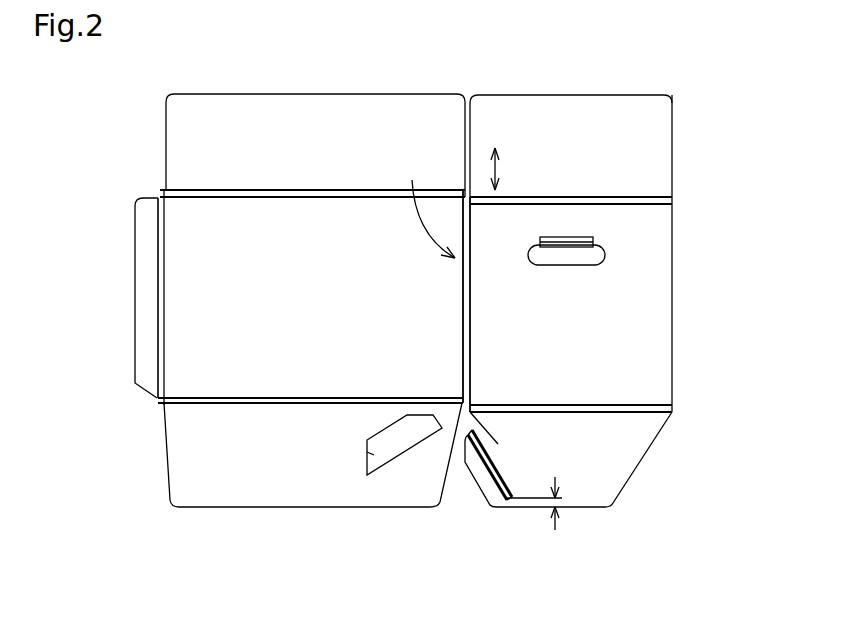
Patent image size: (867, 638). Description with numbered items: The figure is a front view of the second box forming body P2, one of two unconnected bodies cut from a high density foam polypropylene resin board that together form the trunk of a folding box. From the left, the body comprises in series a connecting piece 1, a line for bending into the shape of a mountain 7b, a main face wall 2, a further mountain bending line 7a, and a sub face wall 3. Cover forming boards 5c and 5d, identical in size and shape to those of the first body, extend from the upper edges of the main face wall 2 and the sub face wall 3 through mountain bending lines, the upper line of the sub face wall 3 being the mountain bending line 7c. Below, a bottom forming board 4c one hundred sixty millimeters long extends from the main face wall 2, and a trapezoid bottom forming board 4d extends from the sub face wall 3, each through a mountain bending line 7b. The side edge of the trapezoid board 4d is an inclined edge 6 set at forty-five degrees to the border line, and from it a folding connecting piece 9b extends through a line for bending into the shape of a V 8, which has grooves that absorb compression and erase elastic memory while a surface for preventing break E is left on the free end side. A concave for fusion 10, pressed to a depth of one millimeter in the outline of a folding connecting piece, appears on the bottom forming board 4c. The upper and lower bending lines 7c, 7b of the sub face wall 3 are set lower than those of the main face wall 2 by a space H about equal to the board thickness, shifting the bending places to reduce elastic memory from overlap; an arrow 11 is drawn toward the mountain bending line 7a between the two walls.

The connecting piece 1 is at (145, 307).
The main face wall 2 is at (317, 314).
The sub face wall 3 is at (609, 314).
The bottom forming board 4c is at (243, 465).
The trapezoid bottom forming board 4d is at (596, 465).
The cover forming board 5c is at (338, 155).
The cover forming board 5d is at (592, 155).
The inclined edge 6 is at (498, 444).
The line for bending into the shape of a mountain 7a is at (470, 290).
The line for bending into the shape of a mountain 7b is at (158, 260).
The line for bending into the shape of a mountain 7c is at (203, 190).
The line for bending into the shape of a V 8 is at (495, 500).
The folding connecting piece 9b is at (482, 478).
The concave for fusion 10 is at (370, 452).
The arrow indicating fold direction 11 is at (425, 202).
The space H is at (470, 192).
The surface for preventing break E is at (562, 502).
The box forming body P2 is at (734, 93).